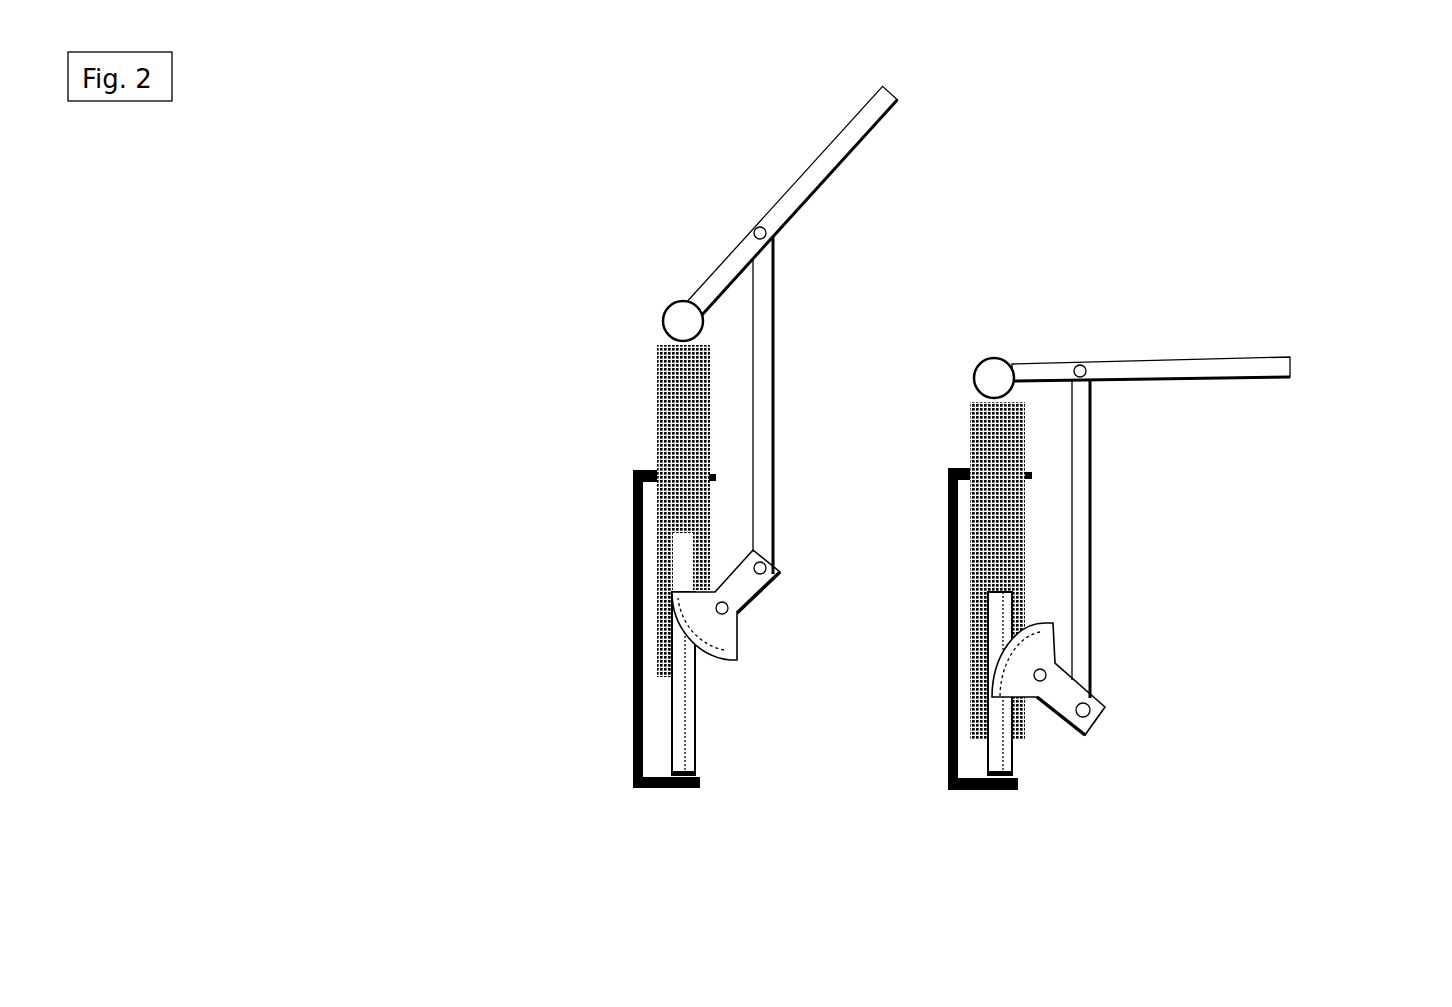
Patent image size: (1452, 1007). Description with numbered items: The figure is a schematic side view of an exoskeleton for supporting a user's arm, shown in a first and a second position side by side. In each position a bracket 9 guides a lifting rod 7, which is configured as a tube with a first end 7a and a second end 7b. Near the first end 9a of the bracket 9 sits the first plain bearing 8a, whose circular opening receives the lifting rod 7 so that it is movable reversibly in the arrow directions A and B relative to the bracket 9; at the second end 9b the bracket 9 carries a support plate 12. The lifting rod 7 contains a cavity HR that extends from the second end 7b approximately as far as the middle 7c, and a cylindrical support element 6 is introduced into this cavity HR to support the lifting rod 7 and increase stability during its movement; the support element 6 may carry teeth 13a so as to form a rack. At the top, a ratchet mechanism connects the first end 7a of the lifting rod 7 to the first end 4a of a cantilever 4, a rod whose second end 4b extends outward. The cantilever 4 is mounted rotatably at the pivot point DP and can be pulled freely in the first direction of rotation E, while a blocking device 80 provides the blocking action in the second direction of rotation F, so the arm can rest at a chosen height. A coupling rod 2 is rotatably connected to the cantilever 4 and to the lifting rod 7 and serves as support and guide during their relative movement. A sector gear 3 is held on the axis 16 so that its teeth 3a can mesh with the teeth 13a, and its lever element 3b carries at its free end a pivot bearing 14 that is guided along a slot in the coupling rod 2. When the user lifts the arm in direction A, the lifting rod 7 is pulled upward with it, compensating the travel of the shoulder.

The coupling rod 2 is at (770, 333).
The sector gear 3 is at (725, 632).
The teeth of the sector gear 3a is at (720, 660).
The lever element 3b is at (748, 590).
The cantilever 4 is at (818, 176).
The first end of the cantilever 4a is at (690, 303).
The second end of the cantilever 4b is at (880, 98).
The support element 6 is at (672, 693).
The lifting rod 7 is at (675, 432).
The first end of the lifting rod 7a is at (700, 378).
The second end of the lifting rod 7b is at (980, 728).
The middle of the lifting rod 7c is at (672, 507).
The first plain bearing 8a is at (716, 477).
The bracket 9 is at (636, 662).
The first end of the bracket 9a is at (636, 476).
The second end of the bracket 9b is at (635, 780).
The support plate 12 is at (665, 790).
The teeth of the rack 13a is at (690, 718).
The pivot bearing 14 is at (765, 562).
The axis 16 is at (727, 610).
The blocking device 80 is at (703, 330).
The cavity HR is at (678, 560).
The pivot point DP is at (668, 316).
The first direction of rotation E is at (678, 370).
The second direction of rotation F is at (835, 407).
The arrow direction A is at (1429, 656).
The arrow direction B is at (1418, 649).